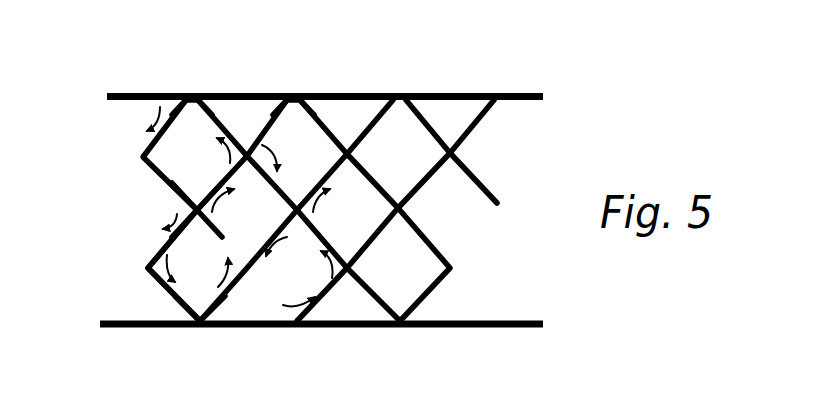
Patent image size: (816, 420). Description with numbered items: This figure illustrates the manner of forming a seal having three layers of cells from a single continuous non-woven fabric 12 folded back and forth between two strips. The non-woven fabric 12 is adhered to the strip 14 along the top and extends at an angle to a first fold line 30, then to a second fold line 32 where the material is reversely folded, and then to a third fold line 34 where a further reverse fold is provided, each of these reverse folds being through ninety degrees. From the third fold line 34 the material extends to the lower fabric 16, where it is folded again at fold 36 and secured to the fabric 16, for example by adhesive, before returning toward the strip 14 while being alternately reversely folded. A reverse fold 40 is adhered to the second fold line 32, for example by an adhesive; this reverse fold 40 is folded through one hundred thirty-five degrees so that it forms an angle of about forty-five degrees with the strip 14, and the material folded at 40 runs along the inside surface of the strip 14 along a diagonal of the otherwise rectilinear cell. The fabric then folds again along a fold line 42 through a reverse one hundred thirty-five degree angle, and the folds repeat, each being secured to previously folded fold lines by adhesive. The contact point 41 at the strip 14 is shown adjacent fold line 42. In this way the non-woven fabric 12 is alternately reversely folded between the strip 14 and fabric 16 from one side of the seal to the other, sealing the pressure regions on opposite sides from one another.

The non-woven fabric 12 is at (287, 207).
The strip 14 is at (512, 92).
The fabric 16 is at (347, 328).
The first fold line 30 is at (143, 157).
The second fold line 32 is at (190, 208).
The third fold line 34 is at (147, 268).
The fold 36 is at (196, 314).
The reverse fold 40 is at (205, 214).
The first top contact 41 is at (230, 92).
The fold line 42 is at (268, 92).